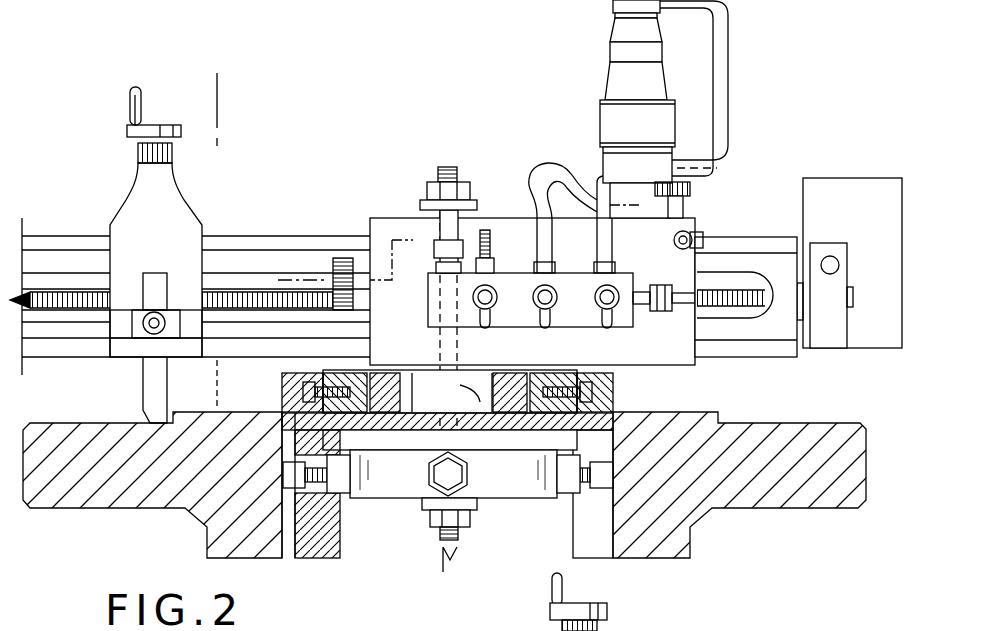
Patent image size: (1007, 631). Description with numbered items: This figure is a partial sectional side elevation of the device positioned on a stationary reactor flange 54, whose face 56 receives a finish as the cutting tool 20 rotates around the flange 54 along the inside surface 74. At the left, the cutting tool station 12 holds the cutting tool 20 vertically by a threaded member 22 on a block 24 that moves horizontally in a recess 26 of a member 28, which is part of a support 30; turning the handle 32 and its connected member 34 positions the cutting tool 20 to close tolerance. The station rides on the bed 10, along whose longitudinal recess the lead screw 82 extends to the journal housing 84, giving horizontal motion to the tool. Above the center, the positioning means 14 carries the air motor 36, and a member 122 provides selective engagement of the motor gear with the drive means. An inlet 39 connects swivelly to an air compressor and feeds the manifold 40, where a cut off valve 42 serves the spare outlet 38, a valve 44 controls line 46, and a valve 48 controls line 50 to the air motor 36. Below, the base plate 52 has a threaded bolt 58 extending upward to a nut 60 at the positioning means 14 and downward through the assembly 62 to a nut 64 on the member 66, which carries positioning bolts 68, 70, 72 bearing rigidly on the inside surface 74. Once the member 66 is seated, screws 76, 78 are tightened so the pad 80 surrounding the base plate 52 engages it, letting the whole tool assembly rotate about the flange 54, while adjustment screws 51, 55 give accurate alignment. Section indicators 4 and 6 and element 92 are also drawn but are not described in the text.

The section line 4 is at (290, 268).
The section line 6 is at (217, 90).
The bed 10 is at (322, 233).
The cutting tool station 12 is at (186, 187).
The positioning means 14 is at (378, 215).
The cutting tool 20 is at (148, 407).
The threaded member 22 is at (148, 328).
The block 24 is at (172, 325).
The recess 26 is at (122, 316).
The member 28 is at (100, 320).
The support 30 is at (145, 195).
The handle 32 is at (133, 100).
The member 34 is at (135, 133).
The air motor 36 is at (622, 52).
The spare outlet 38 is at (483, 236).
The inlet 39 is at (449, 246).
The manifold 40 is at (430, 290).
The cut off valve 42 is at (487, 297).
The valve 44 is at (545, 300).
The line 46 is at (566, 166).
The valve 48 is at (607, 300).
The line 50 is at (722, 42).
The adjustment screw 51 is at (377, 425).
The base plate 52 is at (430, 403).
The reactor flange 54 is at (74, 509).
The adjustment screw 55 is at (575, 482).
The face 56 is at (70, 410).
The threaded bolt 58 is at (445, 168).
The nut 60 is at (456, 192).
The assembly 62 is at (527, 437).
The nut 64 is at (443, 533).
The member 66 is at (493, 498).
The positioning bolt 68 is at (330, 480).
The positioning bolt 70 is at (447, 480).
The positioning bolt 72 is at (600, 478).
The inside surface 74 is at (283, 533).
The screw 76 is at (305, 386).
The screw 78 is at (592, 386).
The pad 80 is at (622, 413).
The lead screw 82 is at (230, 290).
The journal housing 84 is at (835, 325).
The screw tip 92 is at (446, 579).
The member 122 is at (684, 205).